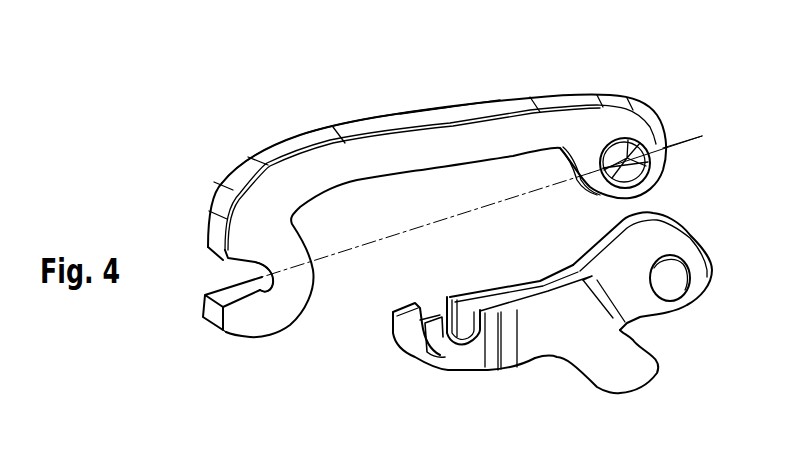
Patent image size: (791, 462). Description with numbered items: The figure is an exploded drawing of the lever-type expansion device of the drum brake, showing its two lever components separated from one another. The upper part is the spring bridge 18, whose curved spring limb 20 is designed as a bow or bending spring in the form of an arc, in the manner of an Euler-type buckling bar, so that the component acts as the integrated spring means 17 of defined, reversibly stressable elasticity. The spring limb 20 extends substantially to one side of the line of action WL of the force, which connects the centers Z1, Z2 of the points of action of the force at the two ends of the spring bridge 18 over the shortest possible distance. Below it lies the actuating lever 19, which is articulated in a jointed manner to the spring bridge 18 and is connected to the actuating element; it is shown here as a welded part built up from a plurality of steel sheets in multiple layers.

The spring means 17 is at (518, 84).
The spring bridge 18 is at (422, 112).
The actuating lever 19 is at (543, 363).
The spring limb 20 is at (445, 142).
The center of point of action of force Z1 is at (640, 166).
The center of point of action of force Z2 is at (258, 278).
The line of action WL is at (683, 139).